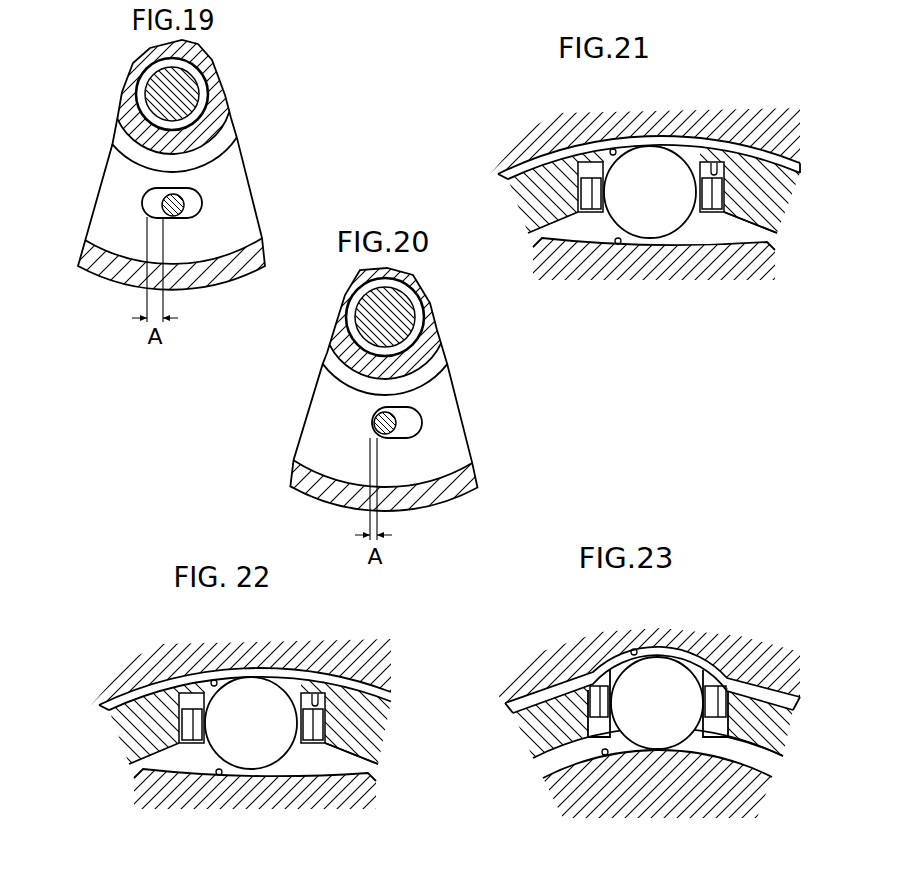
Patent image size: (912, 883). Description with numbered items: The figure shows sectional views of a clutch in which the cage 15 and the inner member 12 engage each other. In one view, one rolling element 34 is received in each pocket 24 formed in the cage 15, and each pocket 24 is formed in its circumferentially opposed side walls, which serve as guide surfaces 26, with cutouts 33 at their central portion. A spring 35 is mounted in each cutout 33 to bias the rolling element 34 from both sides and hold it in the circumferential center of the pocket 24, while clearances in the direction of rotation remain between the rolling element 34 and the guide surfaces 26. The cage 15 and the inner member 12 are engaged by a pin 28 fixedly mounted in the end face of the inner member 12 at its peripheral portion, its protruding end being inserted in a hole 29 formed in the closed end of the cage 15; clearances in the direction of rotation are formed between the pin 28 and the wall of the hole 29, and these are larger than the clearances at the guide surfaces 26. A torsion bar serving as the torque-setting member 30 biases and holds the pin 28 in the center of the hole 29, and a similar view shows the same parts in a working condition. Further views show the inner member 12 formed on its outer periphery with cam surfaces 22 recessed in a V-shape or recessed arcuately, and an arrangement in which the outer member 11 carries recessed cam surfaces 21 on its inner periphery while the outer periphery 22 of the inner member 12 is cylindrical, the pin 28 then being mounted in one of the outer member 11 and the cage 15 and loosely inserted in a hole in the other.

In FIG. 21, the outer member 11 is at (503, 143).
In FIG. 22, the outer member 11 is at (228, 671).
In FIG. 23, the outer member 11 is at (557, 660).
In FIG. 21, the inner member 12 is at (665, 258).
In FIG. 22, the inner member 12 is at (255, 811).
In FIG. 23, the inner member 12 is at (663, 780).
In FIG. 19, the cage 15 is at (98, 264).
In FIG. 20, the cage 15 is at (313, 488).
In FIG. 21, the cage 15 is at (528, 205).
In FIG. 22, the cage 15 is at (230, 721).
In FIG. 23, the cage 15 is at (532, 727).
In FIG. 21, the cam surfaces 21 is at (612, 149).
In FIG. 22, the cam surfaces 21 is at (197, 643).
In FIG. 23, the cam surfaces 21 is at (637, 649).
In FIG. 21, the cam surfaces 22 is at (620, 244).
In FIG. 22, the cam surfaces 22 is at (191, 811).
In FIG. 23, the cam surfaces 22 is at (604, 756).
In FIG. 21, the pocket 24 is at (602, 163).
In FIG. 22, the pocket 24 is at (232, 679).
In FIG. 23, the pocket 24 is at (612, 729).
In FIG. 21, the guide surfaces 26 is at (708, 163).
In FIG. 22, the guide surfaces 26 is at (320, 653).
In FIG. 23, the guide surfaces 26 is at (712, 731).
In FIG. 19, the pin 28 is at (183, 204).
In FIG. 20, the pin 28 is at (392, 430).
In FIG. 19, the hole 29 is at (178, 217).
In FIG. 20, the hole 29 is at (418, 413).
In FIG. 19, the torque-setting member 30 is at (193, 88).
In FIG. 20, the torque-setting member 30 is at (398, 312).
In FIG. 21, the cutouts 33 is at (748, 228).
In FIG. 22, the cutouts 33 is at (351, 798).
In FIG. 23, the cutouts 33 is at (724, 742).
In FIG. 21, the rolling element 34 is at (648, 155).
In FIG. 22, the rolling element 34 is at (251, 683).
In FIG. 23, the rolling element 34 is at (673, 667).
In FIG. 21, the spring 35 is at (583, 180).
In FIG. 22, the spring 35 is at (215, 781).
In FIG. 23, the spring 35 is at (714, 685).